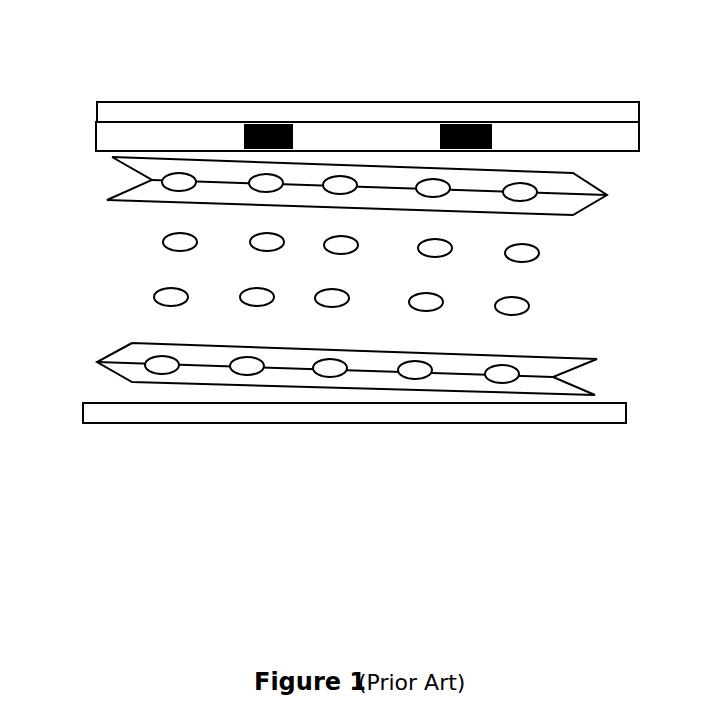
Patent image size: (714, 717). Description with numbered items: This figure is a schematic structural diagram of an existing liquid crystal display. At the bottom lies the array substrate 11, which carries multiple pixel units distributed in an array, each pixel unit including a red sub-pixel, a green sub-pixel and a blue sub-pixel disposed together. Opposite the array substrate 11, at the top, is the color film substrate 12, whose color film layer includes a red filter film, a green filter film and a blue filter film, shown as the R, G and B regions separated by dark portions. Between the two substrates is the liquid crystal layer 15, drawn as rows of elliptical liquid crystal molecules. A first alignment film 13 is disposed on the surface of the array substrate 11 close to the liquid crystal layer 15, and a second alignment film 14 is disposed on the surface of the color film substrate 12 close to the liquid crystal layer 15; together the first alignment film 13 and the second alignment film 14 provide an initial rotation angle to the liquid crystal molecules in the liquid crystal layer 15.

The array substrate 11 is at (383, 423).
The color film substrate 12 is at (360, 102).
The first alignment film 13 is at (117, 355).
The second alignment film 14 is at (607, 195).
The liquid crystal layer 15 is at (580, 292).